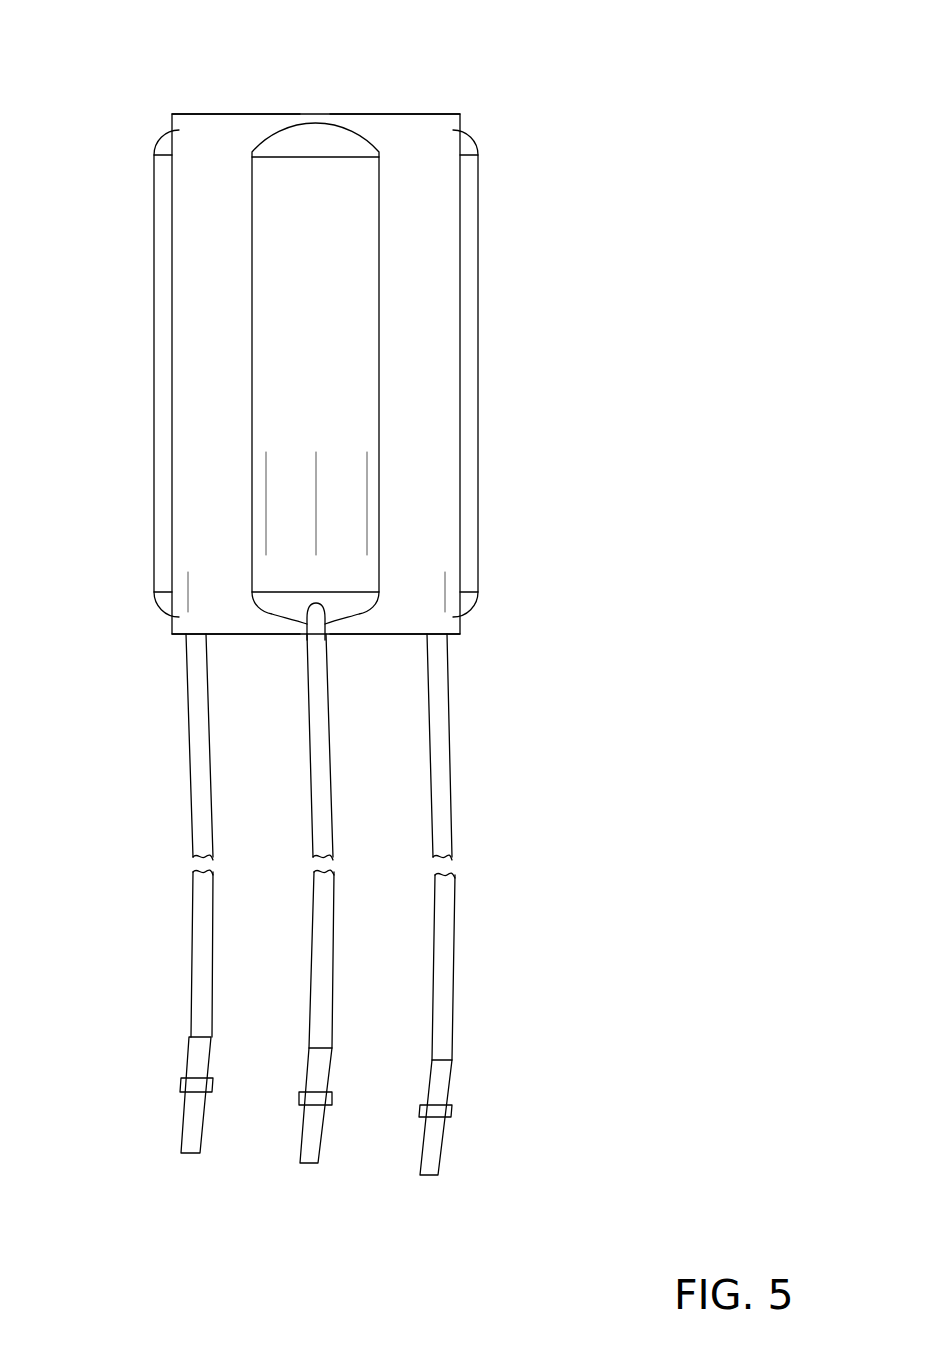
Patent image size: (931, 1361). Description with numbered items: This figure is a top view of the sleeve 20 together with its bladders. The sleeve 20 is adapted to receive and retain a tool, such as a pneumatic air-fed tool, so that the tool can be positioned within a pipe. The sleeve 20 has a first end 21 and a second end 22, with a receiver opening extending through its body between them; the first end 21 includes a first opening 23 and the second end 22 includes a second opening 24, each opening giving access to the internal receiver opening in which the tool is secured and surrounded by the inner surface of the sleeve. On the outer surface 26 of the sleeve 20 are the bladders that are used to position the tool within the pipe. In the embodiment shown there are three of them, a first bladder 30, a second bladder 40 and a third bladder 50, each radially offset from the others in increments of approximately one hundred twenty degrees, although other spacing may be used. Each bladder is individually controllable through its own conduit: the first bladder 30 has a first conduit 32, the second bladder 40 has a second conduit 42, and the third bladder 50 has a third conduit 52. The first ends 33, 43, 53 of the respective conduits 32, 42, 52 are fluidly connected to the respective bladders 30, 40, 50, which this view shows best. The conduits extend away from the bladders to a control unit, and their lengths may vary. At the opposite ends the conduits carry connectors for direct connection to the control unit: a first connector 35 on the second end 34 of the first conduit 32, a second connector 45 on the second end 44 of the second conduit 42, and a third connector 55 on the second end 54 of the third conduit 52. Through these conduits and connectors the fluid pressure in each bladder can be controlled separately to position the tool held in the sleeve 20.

The sleeve 20 is at (413, 222).
The second end 22 is at (405, 114).
The second opening 24 is at (238, 114).
The second bladder 40 is at (154, 335).
The first bladder 30 is at (478, 455).
The outer surface 26 is at (208, 508).
The third bladder 50 is at (320, 328).
The first end 21 is at (257, 635).
The first opening 23 is at (385, 637).
The first end of third conduit 53 is at (327, 643).
The first end of second conduit 43 is at (188, 645).
The third conduit 52 is at (327, 782).
The first end of first conduit 33 is at (448, 645).
The second conduit 42 is at (193, 913).
The first conduit 32 is at (455, 917).
The second end of second conduit 44 is at (183, 1153).
The second connector 45 is at (188, 1058).
The second end of third conduit 54 is at (303, 1163).
The third connector 55 is at (330, 1073).
The second end of first conduit 34 is at (427, 1177).
The first connector 35 is at (452, 1088).